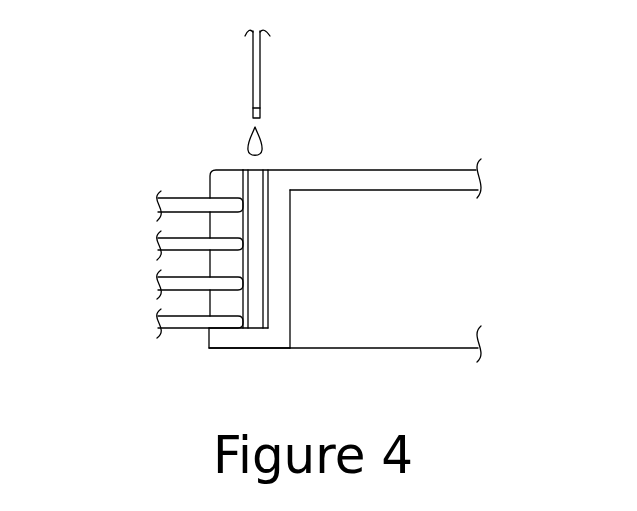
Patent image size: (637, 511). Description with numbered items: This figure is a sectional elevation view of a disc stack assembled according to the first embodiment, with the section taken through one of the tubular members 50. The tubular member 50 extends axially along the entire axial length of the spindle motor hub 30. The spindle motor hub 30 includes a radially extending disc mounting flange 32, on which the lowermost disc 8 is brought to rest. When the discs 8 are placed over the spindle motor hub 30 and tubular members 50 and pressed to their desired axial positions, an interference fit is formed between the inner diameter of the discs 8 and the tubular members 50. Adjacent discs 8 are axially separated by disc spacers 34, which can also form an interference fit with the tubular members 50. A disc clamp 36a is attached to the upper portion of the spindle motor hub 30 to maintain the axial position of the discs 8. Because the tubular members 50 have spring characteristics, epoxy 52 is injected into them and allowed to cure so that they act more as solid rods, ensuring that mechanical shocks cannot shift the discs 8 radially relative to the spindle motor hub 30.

The disc 8 is at (173, 324).
The spindle motor hub 30 is at (398, 180).
The disc mounting flange 32 is at (223, 338).
The disc spacer 34 is at (217, 265).
The disc clamp 36a is at (223, 187).
The tubular member 50 is at (270, 245).
The epoxy 52 is at (263, 142).